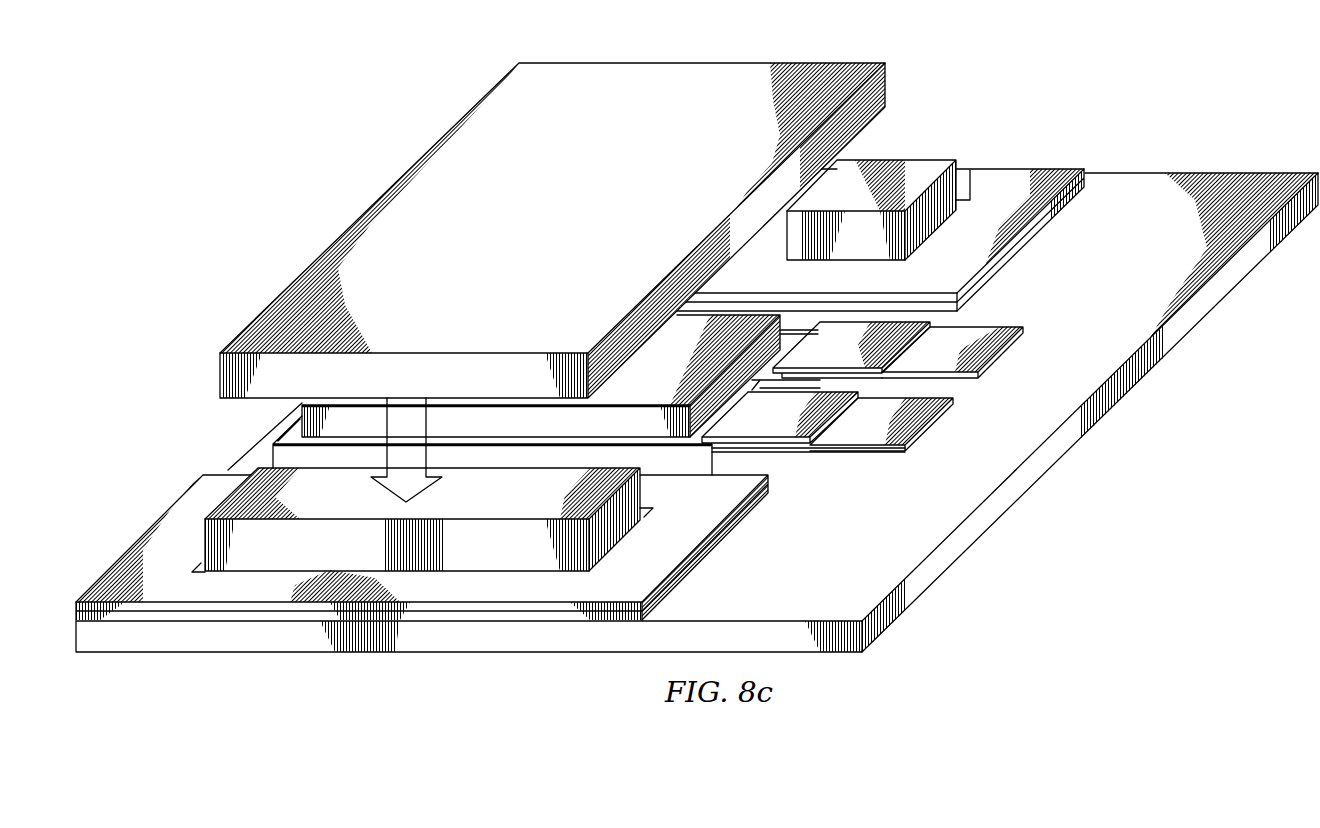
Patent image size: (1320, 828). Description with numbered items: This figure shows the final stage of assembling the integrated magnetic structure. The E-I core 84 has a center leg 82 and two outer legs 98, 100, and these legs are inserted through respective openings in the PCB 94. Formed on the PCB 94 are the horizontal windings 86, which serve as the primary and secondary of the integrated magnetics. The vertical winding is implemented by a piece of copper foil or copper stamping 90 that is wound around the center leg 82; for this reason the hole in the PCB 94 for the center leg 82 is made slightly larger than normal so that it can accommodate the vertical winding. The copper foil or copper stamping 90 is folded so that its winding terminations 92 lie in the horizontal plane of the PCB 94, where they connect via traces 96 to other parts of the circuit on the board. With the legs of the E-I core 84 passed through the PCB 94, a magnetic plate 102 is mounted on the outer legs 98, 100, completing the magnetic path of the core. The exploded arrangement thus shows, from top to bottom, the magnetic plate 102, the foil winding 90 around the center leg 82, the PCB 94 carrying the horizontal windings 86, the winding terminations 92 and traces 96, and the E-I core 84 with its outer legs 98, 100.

The center leg 82 is at (667, 355).
The E-I core 84 is at (284, 195).
The horizontal windings 86 is at (173, 525).
The copper foil or copper stamping 90 is at (282, 457).
The winding terminations 92 is at (857, 337).
The PCB 94 is at (1145, 183).
The traces 96 is at (910, 413).
The outer leg 98 is at (917, 170).
The outer leg 100 is at (620, 533).
The magnetic plate 102 is at (461, 143).